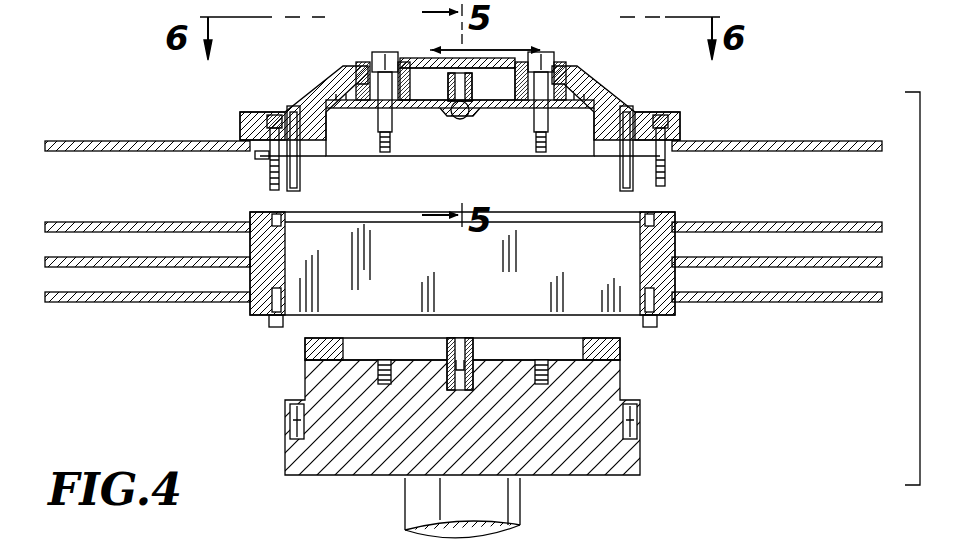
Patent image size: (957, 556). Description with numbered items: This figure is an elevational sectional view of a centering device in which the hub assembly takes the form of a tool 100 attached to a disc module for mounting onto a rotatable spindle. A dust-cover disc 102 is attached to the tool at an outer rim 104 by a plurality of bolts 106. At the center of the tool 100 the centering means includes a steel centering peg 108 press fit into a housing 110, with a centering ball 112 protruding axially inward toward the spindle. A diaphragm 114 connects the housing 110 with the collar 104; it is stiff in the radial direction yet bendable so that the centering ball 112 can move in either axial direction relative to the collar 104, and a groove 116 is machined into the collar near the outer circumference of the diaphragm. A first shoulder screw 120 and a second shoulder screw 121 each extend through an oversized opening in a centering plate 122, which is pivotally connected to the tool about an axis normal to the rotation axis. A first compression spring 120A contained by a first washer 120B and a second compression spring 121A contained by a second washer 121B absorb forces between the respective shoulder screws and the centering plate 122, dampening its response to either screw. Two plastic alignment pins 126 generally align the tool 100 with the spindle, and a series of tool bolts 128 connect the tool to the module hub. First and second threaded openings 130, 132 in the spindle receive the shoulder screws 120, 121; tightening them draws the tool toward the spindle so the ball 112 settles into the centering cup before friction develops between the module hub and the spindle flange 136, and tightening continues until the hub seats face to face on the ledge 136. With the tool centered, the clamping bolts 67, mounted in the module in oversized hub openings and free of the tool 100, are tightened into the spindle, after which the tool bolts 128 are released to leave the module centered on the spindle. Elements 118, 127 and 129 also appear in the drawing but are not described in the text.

The tool 100 is at (212, 82).
The dust-cover disc 102 is at (80, 141).
The outer rim 104 is at (240, 118).
The bolts 106 is at (256, 154).
The steel centering peg 108 is at (472, 104).
The housing 110 is at (452, 118).
The centering ball 112 is at (466, 118).
The diaphragm 114 is at (425, 110).
The groove 116 is at (575, 112).
The end block 118 is at (582, 70).
The first shoulder screw 120 is at (387, 52).
The first compression spring 120A is at (362, 82).
The first washer 120B is at (360, 70).
The second shoulder screw 121 is at (554, 60).
The second compression spring 121A is at (512, 72).
The second washer 121B is at (530, 78).
The centering plate 122 is at (415, 60).
The plastic alignment pins 126 is at (301, 185).
The set screw 127 is at (292, 424).
The tool bolts 128 is at (270, 178).
The set screw 129 is at (640, 422).
The first threaded opening 130 is at (383, 360).
The second threaded opening 132 is at (540, 360).
The spindle flange 136 is at (292, 405).
The clamping bolts 67 is at (663, 172).